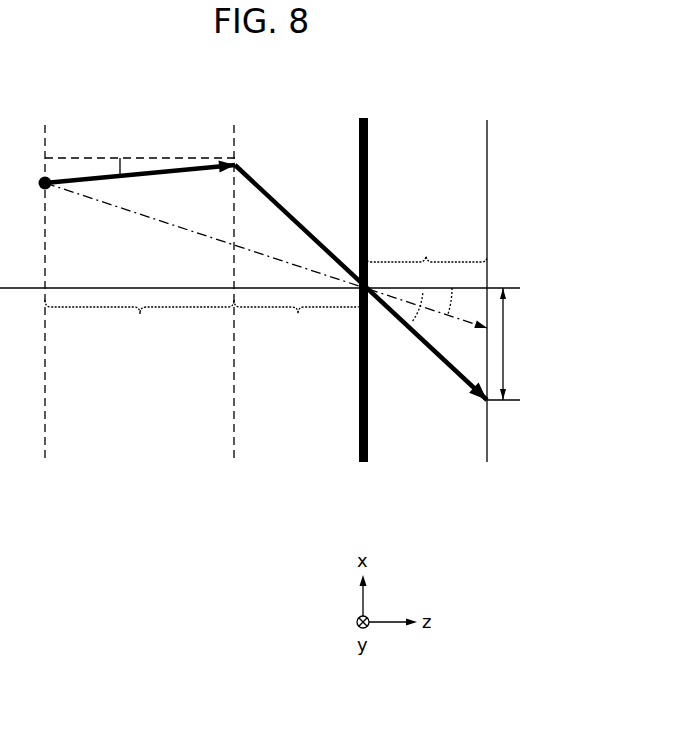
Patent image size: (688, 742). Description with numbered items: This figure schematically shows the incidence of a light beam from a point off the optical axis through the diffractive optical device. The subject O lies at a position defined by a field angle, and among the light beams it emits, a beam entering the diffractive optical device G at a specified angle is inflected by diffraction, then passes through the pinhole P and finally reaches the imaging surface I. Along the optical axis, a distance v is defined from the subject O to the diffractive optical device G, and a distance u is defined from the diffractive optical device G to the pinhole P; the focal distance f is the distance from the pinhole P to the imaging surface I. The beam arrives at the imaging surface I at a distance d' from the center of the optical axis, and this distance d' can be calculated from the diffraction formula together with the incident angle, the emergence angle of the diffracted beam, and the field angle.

The subject O is at (32, 174).
The diffractive optical device G is at (143, 267).
The pinhole P is at (361, 267).
The imaging surface I is at (486, 267).
The focal distance f is at (426, 248).
The distance from diffractive optical device to pinhole u is at (298, 323).
The distance from subject to diffractive optical device v is at (139, 323).
The distance between diffraction figure position and optical axis center d' is at (508, 344).